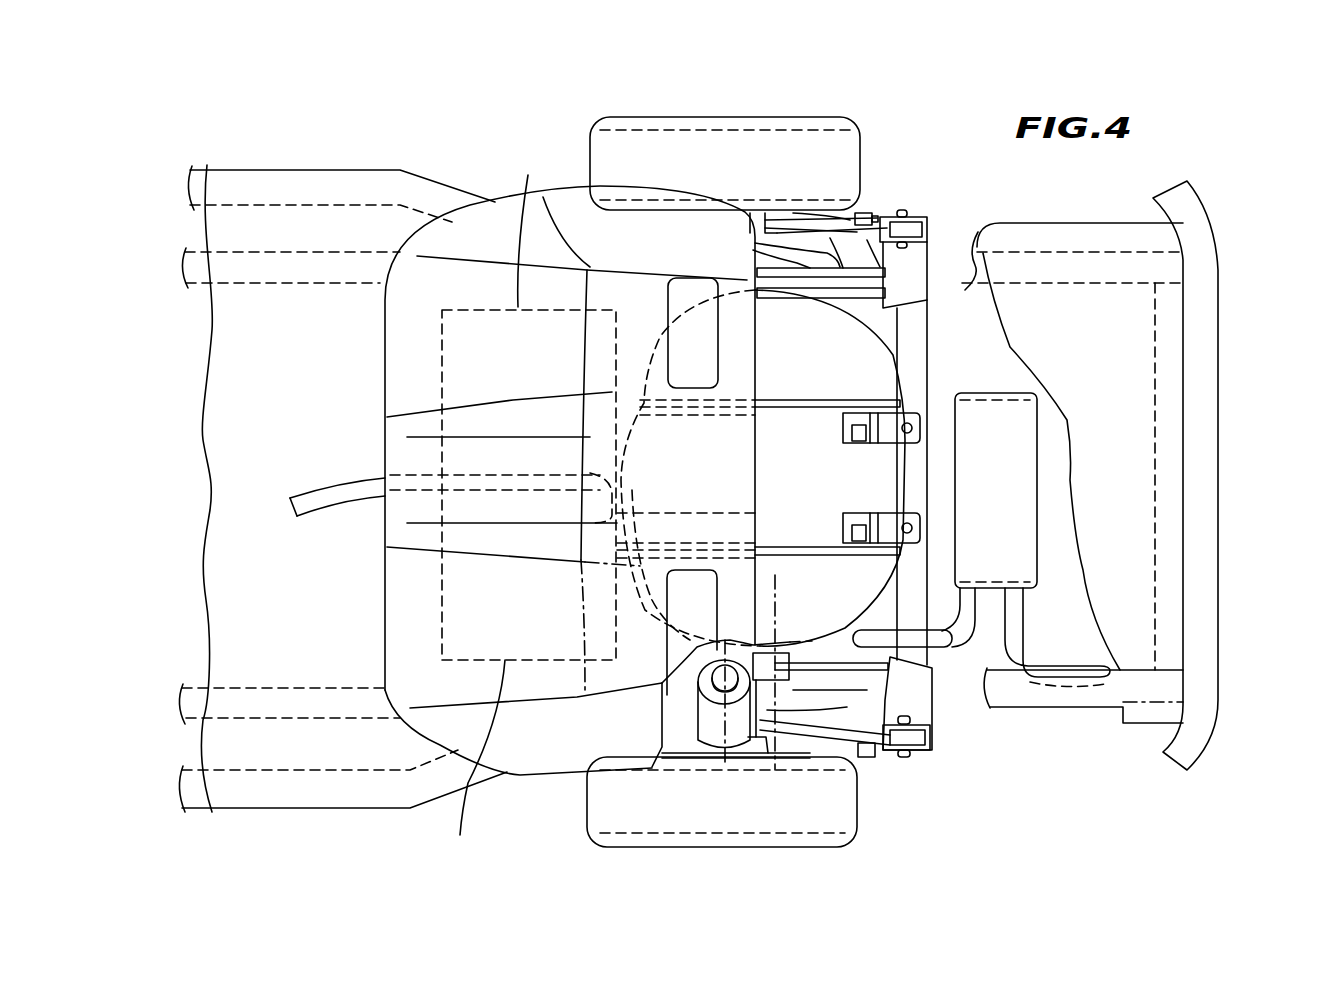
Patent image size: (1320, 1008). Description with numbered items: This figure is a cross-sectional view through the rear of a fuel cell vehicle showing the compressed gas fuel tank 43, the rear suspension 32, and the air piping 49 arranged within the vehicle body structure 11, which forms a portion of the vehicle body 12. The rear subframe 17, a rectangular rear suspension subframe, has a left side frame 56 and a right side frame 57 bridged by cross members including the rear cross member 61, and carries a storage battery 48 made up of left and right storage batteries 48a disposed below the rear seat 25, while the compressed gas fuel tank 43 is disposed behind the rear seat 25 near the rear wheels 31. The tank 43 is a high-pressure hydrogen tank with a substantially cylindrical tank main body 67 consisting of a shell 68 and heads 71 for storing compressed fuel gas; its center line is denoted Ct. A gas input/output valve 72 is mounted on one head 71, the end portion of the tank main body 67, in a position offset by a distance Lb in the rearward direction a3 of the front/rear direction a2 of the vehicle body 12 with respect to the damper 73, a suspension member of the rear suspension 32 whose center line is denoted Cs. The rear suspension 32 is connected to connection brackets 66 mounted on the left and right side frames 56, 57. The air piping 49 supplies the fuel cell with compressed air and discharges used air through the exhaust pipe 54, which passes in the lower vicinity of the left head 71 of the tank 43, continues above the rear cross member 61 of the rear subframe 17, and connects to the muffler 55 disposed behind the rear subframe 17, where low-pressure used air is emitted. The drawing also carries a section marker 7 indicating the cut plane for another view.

The vehicle body structure 11 is at (418, 140).
The vehicle body 12 is at (327, 140).
The rear subframe 17 is at (947, 328).
The rear seat 25 is at (370, 338).
The rear wheels 31 is at (600, 111).
The rear suspension 32 is at (690, 715).
The compressed gas fuel tank 43 is at (810, 303).
The storage battery 48 is at (492, 307).
The storage batteries 48a is at (495, 508).
The air piping 49 is at (280, 463).
The exhaust pipe 54 is at (314, 515).
The muffler 55 is at (1040, 510).
The left side frame 56 is at (867, 752).
The right side frame 57 is at (847, 207).
The rear cross member 61 is at (881, 465).
The connection brackets 66 is at (912, 213).
The tank main body 67 is at (887, 375).
The shell 68 is at (882, 470).
The heads 71 is at (917, 335).
The gas input/output valve 72 is at (780, 700).
The damper 73 is at (727, 743).
The section line for FIG. 7 is at (315, 612).
The front/rear direction a2 is at (700, 483).
The rearward direction a3 is at (738, 483).
The center line of the compressed gas fuel tank Ct is at (777, 585).
The center line of the suspension member Cs is at (725, 743).
The distance Lb is at (810, 788).